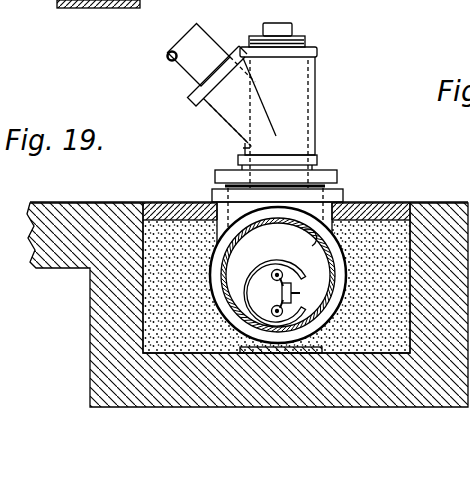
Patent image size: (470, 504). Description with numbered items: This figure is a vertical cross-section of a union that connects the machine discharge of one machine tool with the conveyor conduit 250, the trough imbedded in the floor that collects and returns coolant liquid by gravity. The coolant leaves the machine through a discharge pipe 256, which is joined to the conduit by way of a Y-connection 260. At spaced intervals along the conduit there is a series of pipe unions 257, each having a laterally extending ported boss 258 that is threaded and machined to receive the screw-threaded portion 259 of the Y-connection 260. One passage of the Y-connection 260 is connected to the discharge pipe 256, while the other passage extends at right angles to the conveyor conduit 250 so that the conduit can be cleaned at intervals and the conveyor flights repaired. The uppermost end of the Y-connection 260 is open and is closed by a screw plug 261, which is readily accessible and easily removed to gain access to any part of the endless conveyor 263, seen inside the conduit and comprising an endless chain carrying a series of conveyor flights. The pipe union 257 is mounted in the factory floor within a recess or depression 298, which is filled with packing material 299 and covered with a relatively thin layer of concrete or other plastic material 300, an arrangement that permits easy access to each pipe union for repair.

The conveyor conduit 250 is at (356, 213).
The discharge pipe 256 is at (180, 76).
The pipe union 257 is at (197, 198).
The ported boss 258 is at (333, 207).
The screw-threaded portion 259 is at (318, 182).
The Y-connection 260 is at (293, 79).
The screw plug 261 is at (307, 37).
The conveyor 263 is at (283, 293).
The recess 298 is at (402, 232).
The packing material 299 is at (155, 202).
The layer of concrete 300 is at (157, 242).